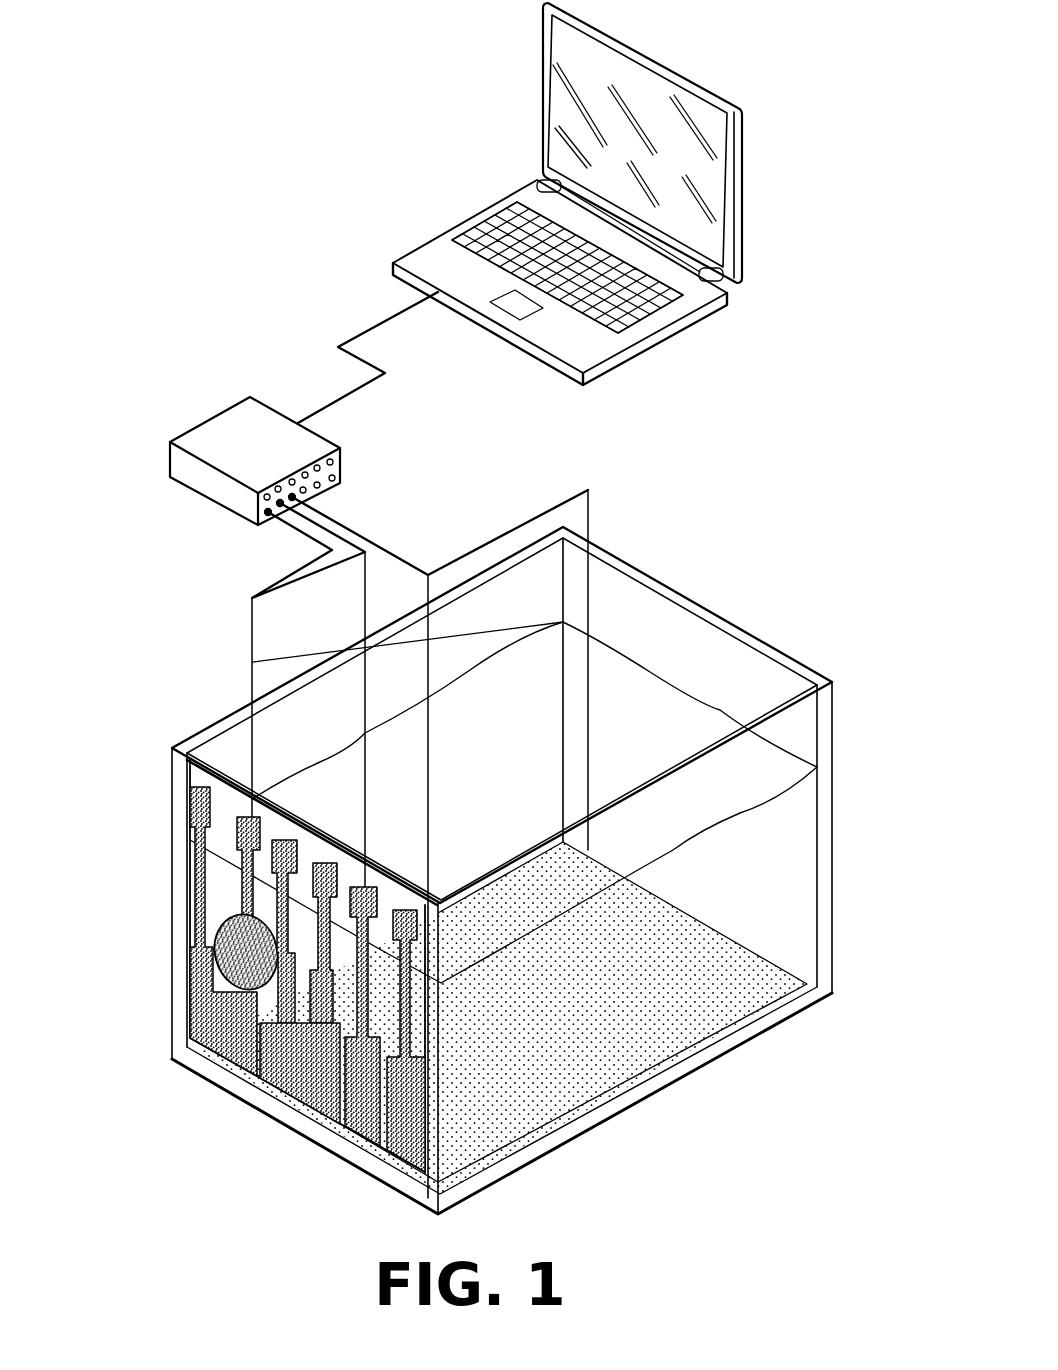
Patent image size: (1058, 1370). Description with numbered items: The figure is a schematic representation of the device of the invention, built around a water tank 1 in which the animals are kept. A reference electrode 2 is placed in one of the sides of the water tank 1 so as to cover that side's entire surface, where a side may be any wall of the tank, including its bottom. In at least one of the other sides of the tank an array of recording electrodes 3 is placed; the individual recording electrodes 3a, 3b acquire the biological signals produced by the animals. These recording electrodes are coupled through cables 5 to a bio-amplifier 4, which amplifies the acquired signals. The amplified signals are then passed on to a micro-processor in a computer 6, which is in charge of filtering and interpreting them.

The water tank 1 is at (727, 622).
The reference electrode 2 is at (600, 1047).
The recording electrodes 3 is at (222, 1037).
The recording electrode 3a is at (300, 1092).
The recording electrode 3b is at (362, 1132).
The bio-amplifier 4 is at (245, 427).
The cables 5 is at (457, 558).
The computer 6 is at (527, 197).